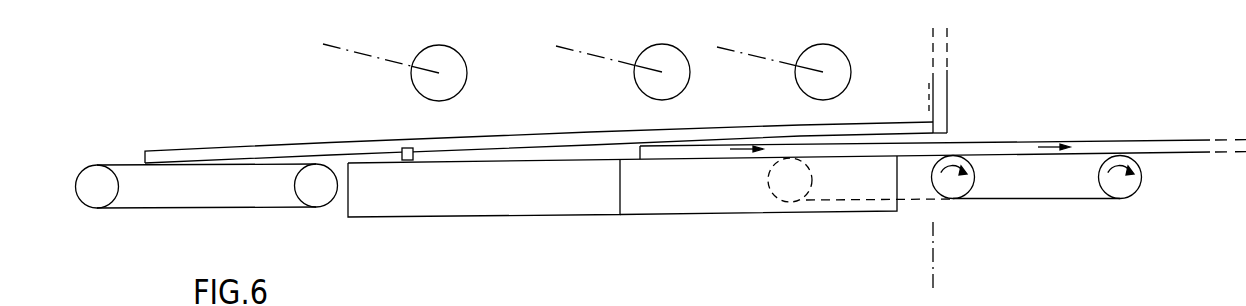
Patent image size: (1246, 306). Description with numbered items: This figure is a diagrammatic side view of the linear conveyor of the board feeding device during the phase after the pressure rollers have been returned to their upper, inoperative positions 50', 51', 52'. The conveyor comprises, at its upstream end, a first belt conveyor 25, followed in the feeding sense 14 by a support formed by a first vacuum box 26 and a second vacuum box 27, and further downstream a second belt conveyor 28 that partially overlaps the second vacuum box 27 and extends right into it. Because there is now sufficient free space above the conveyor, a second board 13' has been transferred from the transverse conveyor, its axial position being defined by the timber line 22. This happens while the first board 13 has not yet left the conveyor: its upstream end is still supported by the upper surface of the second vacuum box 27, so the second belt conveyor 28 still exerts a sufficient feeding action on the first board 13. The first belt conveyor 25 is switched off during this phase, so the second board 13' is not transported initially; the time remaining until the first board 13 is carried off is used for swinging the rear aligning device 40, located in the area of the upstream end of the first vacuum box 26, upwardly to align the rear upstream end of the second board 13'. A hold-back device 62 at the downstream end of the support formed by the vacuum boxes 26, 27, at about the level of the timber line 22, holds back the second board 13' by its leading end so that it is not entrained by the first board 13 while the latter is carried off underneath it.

The board 13 is at (797, 128).
The second board 13' is at (539, 127).
The feeding sense of the linear conveyor 14 is at (1051, 147).
The timber line 22 is at (935, 275).
The first belt conveyor 25 is at (155, 198).
The first vacuum box 26 is at (485, 208).
The second vacuum box 27 is at (712, 207).
The second belt conveyor 28 is at (1032, 190).
The rear aligning device 40 is at (403, 150).
The upper inoperative position of pressure roller 50' is at (408, 57).
The upper inoperative position of pressure roller 51' is at (635, 55).
The upper inoperative position of pressure roller 52' is at (805, 55).
The hold-back device 62 is at (950, 104).